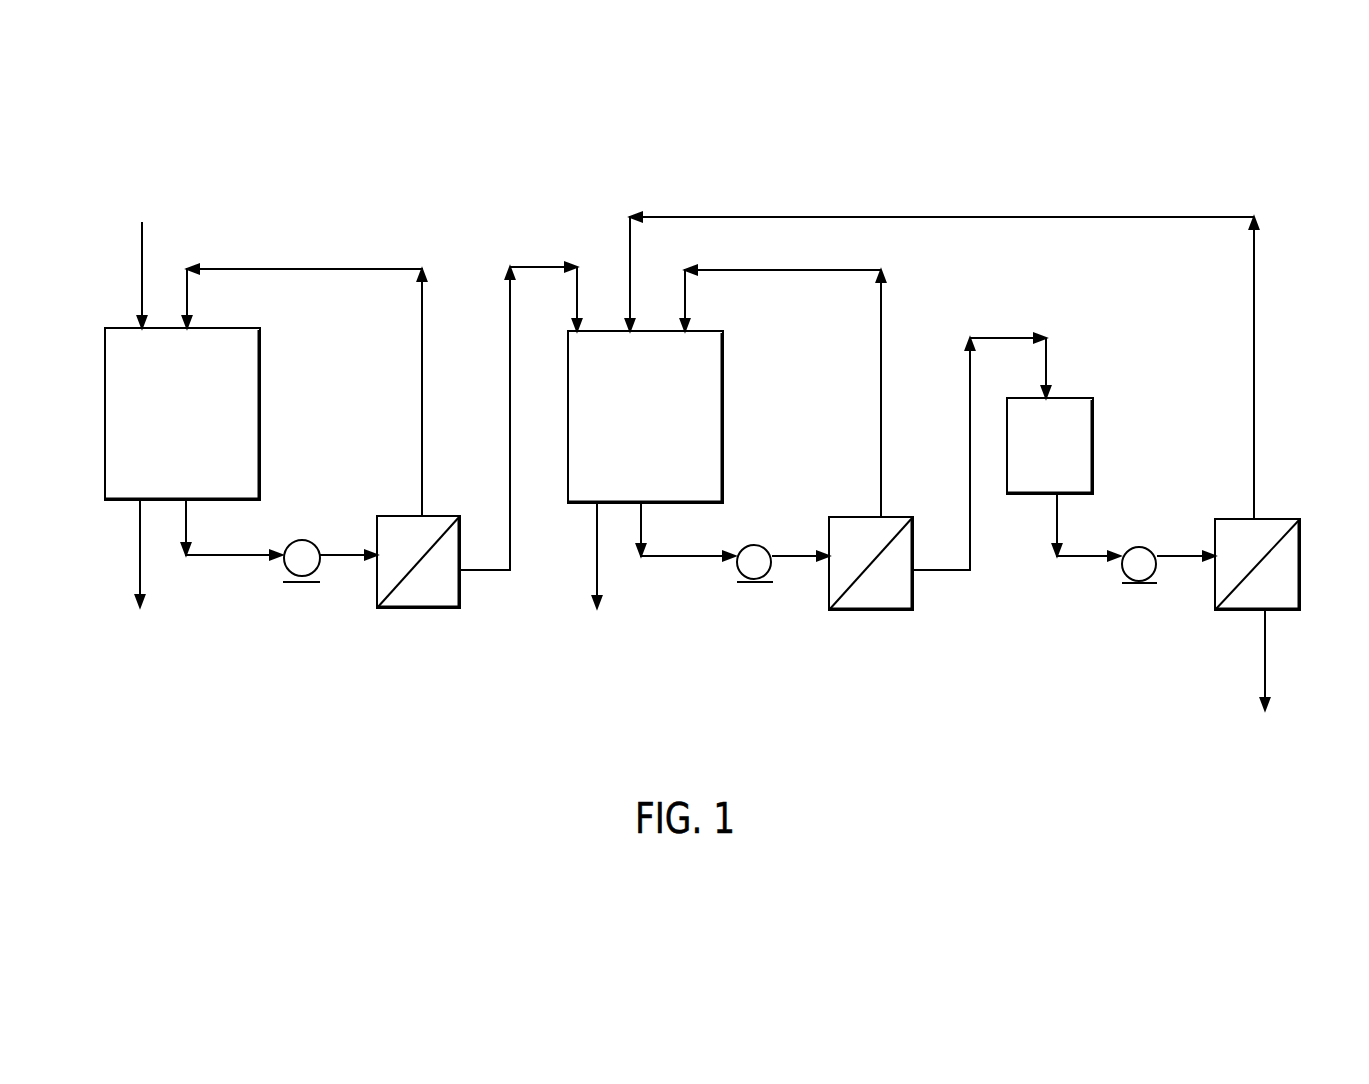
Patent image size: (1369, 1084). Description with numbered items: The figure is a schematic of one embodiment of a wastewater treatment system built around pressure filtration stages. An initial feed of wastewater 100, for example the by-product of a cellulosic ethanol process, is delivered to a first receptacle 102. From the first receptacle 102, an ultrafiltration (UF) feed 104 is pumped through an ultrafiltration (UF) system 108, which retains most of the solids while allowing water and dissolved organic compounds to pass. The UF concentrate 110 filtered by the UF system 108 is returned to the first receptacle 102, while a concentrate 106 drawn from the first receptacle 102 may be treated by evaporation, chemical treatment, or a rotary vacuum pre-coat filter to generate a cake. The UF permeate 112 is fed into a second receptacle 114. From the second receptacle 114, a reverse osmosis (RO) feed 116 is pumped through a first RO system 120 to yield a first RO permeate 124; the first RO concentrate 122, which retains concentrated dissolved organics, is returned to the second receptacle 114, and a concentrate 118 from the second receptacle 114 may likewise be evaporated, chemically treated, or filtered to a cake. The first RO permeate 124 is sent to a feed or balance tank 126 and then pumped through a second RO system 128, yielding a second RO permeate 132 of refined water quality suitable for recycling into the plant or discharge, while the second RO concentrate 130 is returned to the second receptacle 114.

The initial feed of wastewater 100 is at (157, 262).
The first receptacle 102 is at (199, 429).
The ultrafiltration (UF) feed 104 is at (266, 544).
The concentrate 106 is at (155, 571).
The ultrafiltration (UF) system 108 is at (418, 579).
The ultrafiltration (UF) concentrate 110 is at (305, 377).
The ultrafiltration (UF) permeate 112 is at (536, 404).
The second receptacle 114 is at (661, 429).
The reverse osmosis (RO) feed 116 is at (718, 547).
The concentrate 118 is at (600, 573).
The first reverse osmosis (RO) system 120 is at (883, 581).
The first reverse osmosis (RO) concentrate 122 is at (797, 378).
The first reverse osmosis (RO) permeate 124 is at (1040, 439).
The feed or balance tank 126 is at (1065, 456).
The second reverse osmosis (RO) system 128 is at (1205, 581).
The second reverse osmosis (RO) concentrate 130 is at (942, 354).
The second reverse osmosis (RO) permeate 132 is at (1218, 677).